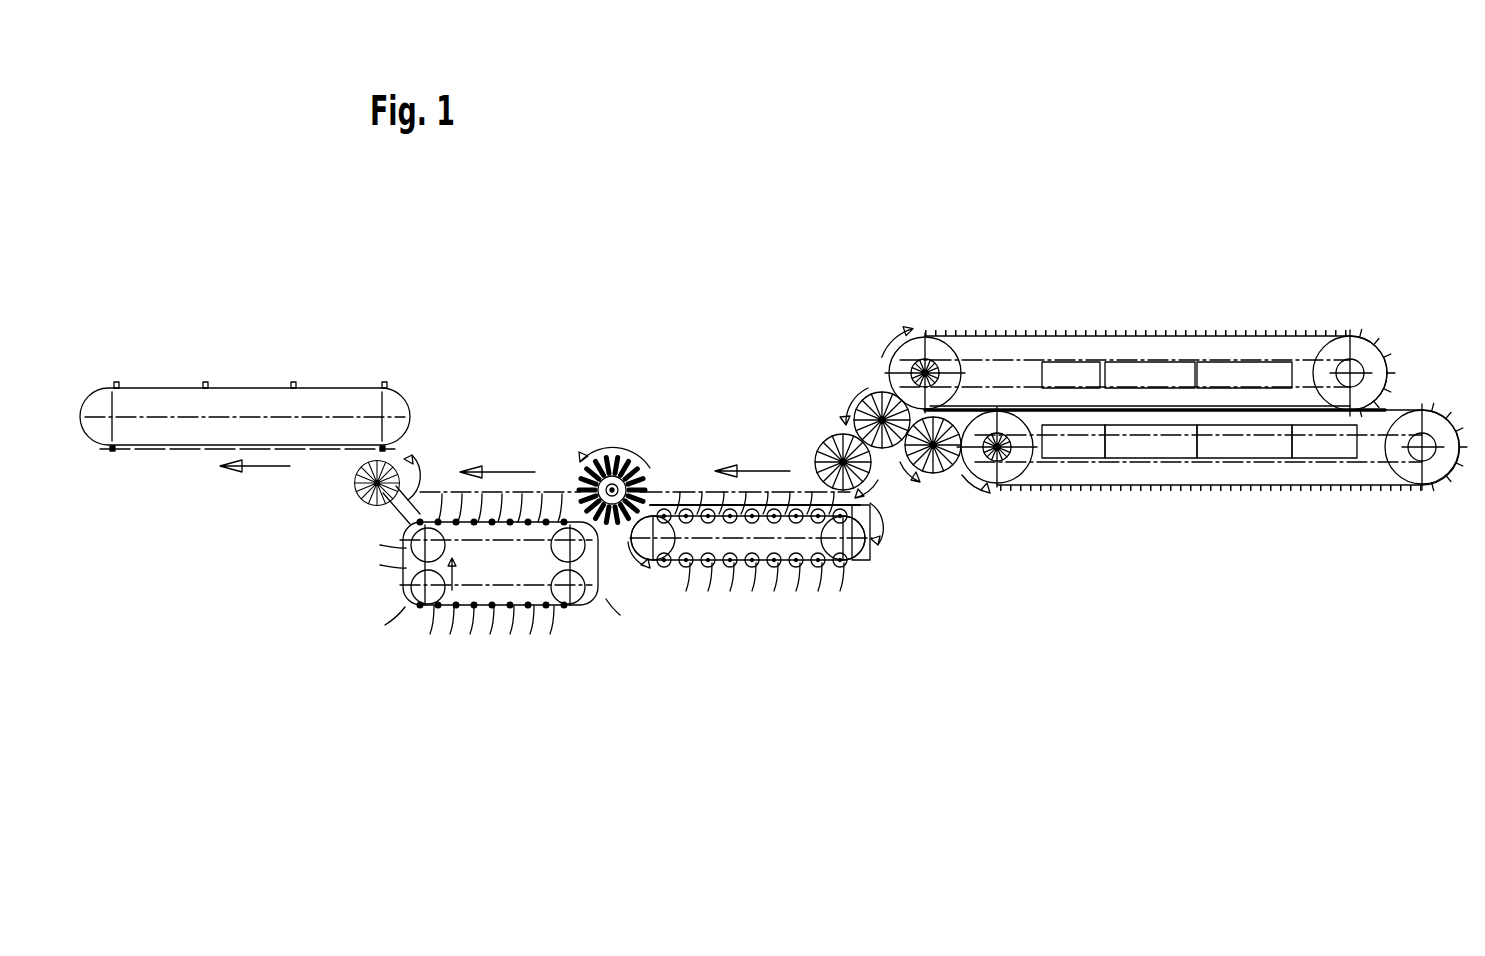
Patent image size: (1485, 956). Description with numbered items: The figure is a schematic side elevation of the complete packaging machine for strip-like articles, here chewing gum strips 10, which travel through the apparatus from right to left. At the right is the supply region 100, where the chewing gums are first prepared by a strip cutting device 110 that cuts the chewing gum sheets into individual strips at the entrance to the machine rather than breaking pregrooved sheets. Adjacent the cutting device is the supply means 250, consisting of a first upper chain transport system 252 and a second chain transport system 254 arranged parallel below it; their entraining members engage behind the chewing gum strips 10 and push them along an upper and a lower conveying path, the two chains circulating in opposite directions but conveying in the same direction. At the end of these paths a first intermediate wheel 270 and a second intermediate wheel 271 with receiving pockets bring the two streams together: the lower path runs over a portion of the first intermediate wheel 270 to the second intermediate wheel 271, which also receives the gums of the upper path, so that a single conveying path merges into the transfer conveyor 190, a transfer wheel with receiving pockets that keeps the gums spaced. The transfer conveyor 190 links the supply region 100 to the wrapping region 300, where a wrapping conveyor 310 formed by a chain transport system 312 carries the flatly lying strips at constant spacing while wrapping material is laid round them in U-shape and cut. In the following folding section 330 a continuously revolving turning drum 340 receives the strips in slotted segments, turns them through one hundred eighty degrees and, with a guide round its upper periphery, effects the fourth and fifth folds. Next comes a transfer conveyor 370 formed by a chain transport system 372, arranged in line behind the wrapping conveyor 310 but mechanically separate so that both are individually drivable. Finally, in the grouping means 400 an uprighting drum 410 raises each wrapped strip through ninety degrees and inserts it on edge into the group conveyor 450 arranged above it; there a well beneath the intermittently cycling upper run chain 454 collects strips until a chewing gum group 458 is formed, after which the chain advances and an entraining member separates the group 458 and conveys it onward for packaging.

The chewing gum strips 10 is at (694, 500).
The supply region 100 is at (1212, 610).
The strip cutting device 110 is at (1180, 365).
The transfer conveyor 190 is at (825, 440).
The supply means 250 is at (1138, 280).
The first upper chain transport system 252 is at (1240, 335).
The second chain transport system 254 is at (1305, 488).
The first intermediate wheel 270 is at (942, 472).
The second intermediate wheel 271 is at (860, 400).
The wrapping region 300 is at (722, 484).
The wrapping conveyor 310 is at (755, 613).
The chain transport system 312 is at (783, 572).
The folding section 330 is at (656, 437).
The turning drum 340 is at (605, 455).
The transfer conveyor 370 is at (470, 637).
The chain transport system 372 is at (400, 577).
The grouping means 400 is at (431, 645).
The uprighting drum 410 is at (372, 505).
The group conveyor 450 is at (245, 371).
The upper run chain 454 is at (253, 388).
The chewing gum group 458 is at (355, 478).